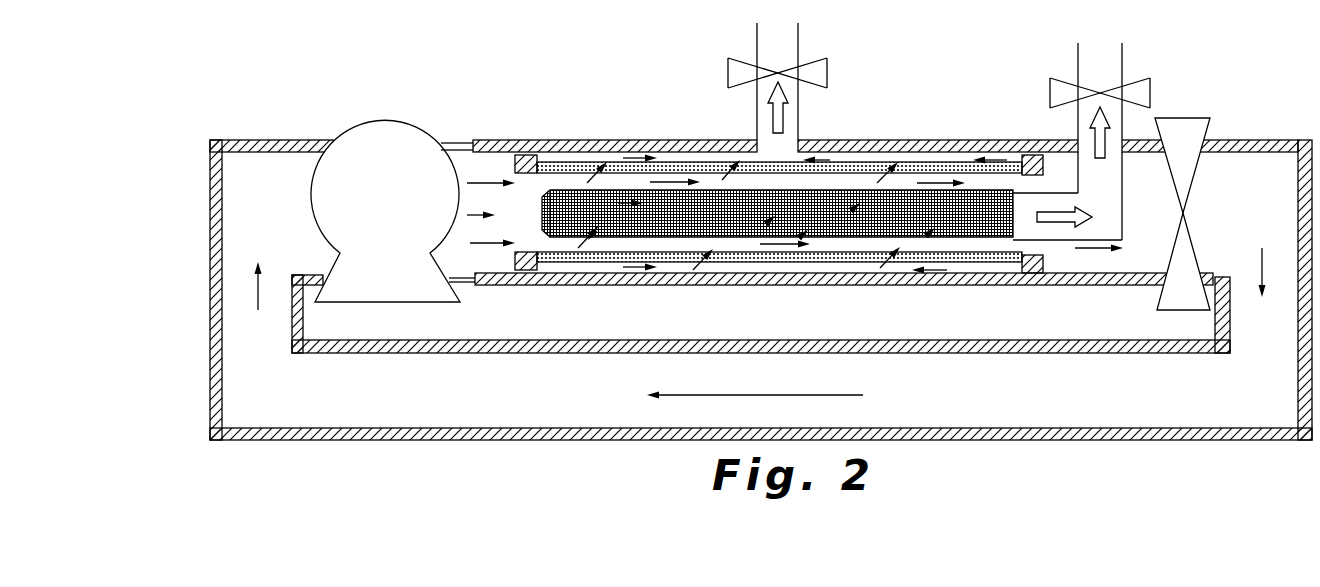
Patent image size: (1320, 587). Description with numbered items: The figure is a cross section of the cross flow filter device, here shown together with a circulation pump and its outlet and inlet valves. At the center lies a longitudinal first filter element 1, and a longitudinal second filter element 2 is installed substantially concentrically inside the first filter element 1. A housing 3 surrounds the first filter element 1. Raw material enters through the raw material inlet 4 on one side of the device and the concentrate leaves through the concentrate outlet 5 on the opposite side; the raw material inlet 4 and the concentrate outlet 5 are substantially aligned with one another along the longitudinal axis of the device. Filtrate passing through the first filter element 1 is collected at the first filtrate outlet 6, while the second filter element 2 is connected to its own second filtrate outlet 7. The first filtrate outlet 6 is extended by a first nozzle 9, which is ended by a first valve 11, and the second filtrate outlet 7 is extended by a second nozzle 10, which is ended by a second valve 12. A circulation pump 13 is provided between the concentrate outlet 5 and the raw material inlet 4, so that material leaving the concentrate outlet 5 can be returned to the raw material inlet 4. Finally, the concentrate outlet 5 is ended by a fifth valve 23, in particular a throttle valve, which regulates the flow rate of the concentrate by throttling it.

The first filter element 1 is at (913, 168).
The second filter element 2 is at (990, 193).
The housing 3 is at (845, 142).
The raw material inlet 4 is at (527, 225).
The concentrate outlet 5 is at (1144, 229).
The first filtrate outlet 6 is at (787, 162).
The second filtrate outlet 7 is at (1036, 229).
The first nozzle 9 is at (800, 125).
The second nozzle 10 is at (1123, 125).
The first valve 11 is at (815, 75).
The second valve 12 is at (1142, 92).
The circulation pump 13 is at (388, 163).
The fifth valve 23 is at (1182, 150).